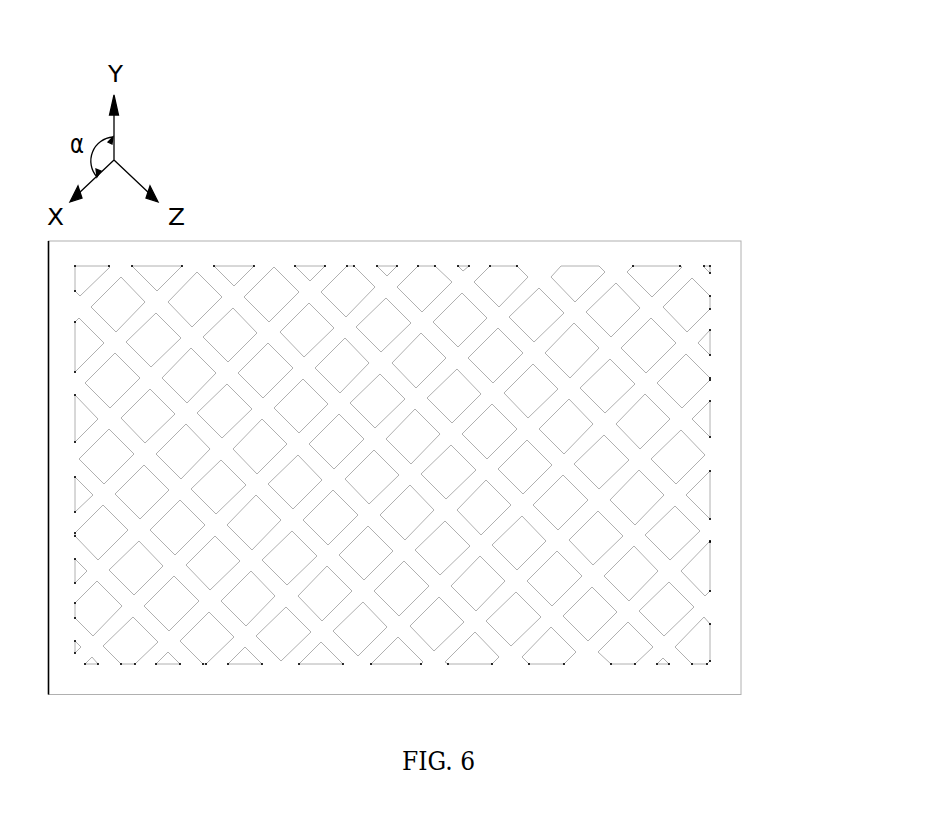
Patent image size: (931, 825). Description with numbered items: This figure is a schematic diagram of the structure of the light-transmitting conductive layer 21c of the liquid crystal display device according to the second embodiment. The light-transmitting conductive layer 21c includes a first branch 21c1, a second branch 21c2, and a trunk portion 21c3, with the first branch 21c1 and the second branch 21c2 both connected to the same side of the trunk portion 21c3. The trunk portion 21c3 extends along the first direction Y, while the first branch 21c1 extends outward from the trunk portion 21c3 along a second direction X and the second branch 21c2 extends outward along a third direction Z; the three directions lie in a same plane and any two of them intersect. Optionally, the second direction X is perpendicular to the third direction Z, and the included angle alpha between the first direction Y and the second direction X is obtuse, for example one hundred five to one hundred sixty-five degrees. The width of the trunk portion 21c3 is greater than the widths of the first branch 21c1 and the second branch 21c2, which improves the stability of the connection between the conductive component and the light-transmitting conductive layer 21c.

The light-transmitting conductive layer 21c is at (719, 197).
The first branch 21c1 is at (598, 293).
The second branch 21c2 is at (695, 513).
The trunk portion 21c3 is at (729, 373).